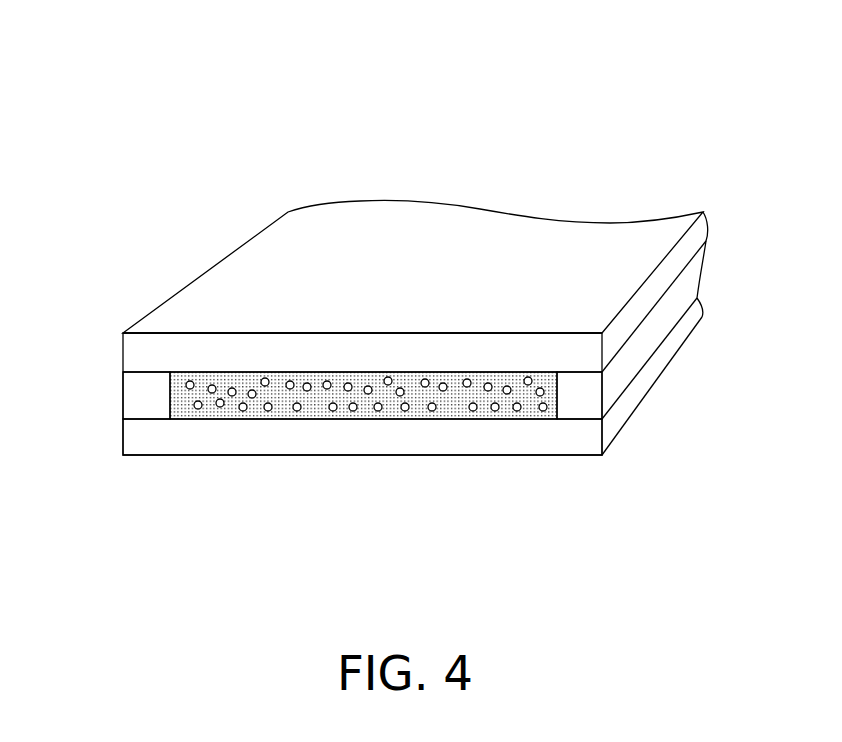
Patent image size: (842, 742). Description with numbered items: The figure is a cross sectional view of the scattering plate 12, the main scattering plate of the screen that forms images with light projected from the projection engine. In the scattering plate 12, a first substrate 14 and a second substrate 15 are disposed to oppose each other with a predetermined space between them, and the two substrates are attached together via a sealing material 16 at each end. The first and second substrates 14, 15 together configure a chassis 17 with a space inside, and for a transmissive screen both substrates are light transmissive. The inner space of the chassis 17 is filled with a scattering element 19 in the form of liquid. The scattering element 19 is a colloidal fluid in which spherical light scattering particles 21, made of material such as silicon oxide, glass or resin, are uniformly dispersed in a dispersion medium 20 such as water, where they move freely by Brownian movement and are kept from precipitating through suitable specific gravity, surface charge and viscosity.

The scattering plate 12 is at (492, 133).
The first substrate 14 is at (372, 216).
The second substrate 15 is at (427, 438).
The sealing material 16 is at (145, 402).
The chassis 17 is at (537, 242).
The scattering element 19 is at (363, 463).
The dispersion medium 20 is at (258, 409).
The light scattering particles 21 is at (200, 409).